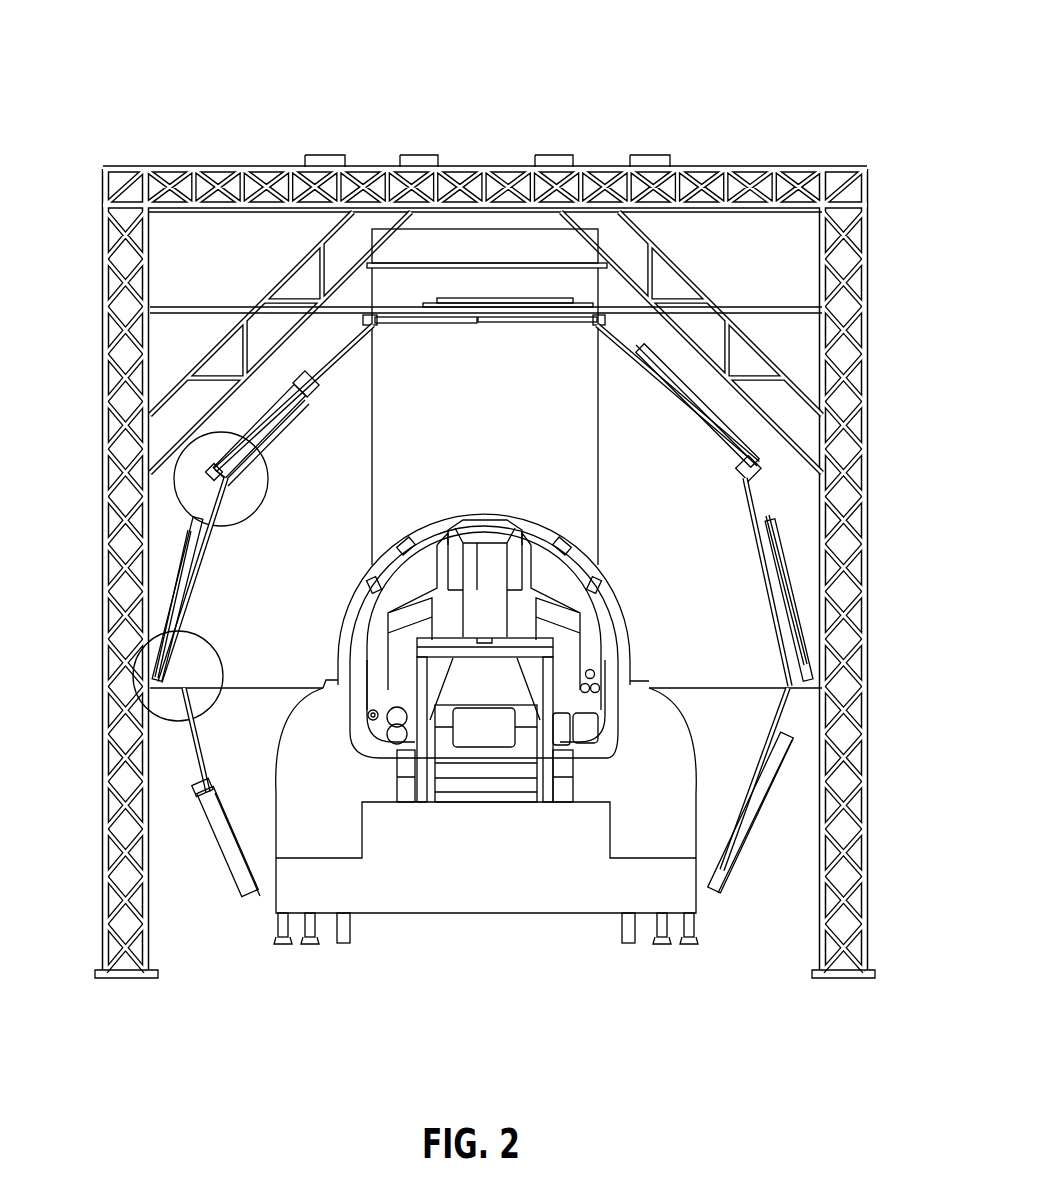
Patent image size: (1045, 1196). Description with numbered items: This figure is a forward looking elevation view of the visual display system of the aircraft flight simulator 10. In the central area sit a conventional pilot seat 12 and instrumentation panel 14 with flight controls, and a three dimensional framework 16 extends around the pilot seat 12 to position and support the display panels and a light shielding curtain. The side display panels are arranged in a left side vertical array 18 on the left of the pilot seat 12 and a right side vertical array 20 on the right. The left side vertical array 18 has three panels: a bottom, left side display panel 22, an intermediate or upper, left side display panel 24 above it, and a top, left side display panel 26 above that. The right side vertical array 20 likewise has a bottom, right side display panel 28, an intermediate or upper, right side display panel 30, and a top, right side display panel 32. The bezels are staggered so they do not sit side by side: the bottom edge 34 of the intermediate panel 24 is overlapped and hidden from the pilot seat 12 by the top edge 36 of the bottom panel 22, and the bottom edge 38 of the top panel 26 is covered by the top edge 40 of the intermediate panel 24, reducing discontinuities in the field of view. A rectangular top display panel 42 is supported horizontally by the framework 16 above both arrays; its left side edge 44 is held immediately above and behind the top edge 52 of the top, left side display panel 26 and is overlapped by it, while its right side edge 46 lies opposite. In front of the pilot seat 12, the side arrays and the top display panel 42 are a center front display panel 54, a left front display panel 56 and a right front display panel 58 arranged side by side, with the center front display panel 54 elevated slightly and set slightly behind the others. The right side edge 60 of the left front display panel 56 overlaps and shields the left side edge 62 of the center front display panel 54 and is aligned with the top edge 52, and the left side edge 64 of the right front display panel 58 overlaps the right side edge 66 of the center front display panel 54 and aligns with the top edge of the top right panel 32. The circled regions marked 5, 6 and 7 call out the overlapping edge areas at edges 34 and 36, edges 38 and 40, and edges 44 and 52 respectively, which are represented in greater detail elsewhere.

The aircraft flight simulator 10 is at (673, 55).
The pilot seat 12 is at (513, 565).
The instrumentation panel 14 is at (590, 702).
The framework 16 is at (813, 163).
The left side vertical array 18 is at (330, 310).
The right side vertical array 20 is at (670, 350).
The bottom, left side display panel 22 is at (205, 845).
The intermediate or upper, left side display panel 24 is at (215, 614).
The top, left side display panel 26 is at (262, 428).
The bottom, right side display panel 28 is at (793, 732).
The intermediate or upper, right side display panel 30 is at (795, 612).
The top, right side display panel 32 is at (752, 448).
The bottom edge 34 is at (190, 700).
The top edge 36 is at (140, 655).
The bottom edge 38 is at (205, 470).
The top edge 40 is at (245, 453).
The top display panel 42 is at (462, 324).
The left side edge 44 is at (345, 348).
The right side edge 46 is at (612, 320).
The top edge 52 is at (365, 328).
The center front display panel 54 is at (498, 243).
The left front display panel 56 is at (193, 567).
The right front display panel 58 is at (785, 523).
The right side edge 60 is at (300, 386).
The left side edge 62 is at (352, 208).
The left side edge 64 is at (700, 398).
The right side edge 66 is at (640, 250).
The left lower pivot block 5 is at (200, 770).
The left panel bracket 6 is at (280, 530).
The left arm joint 7 is at (290, 355).